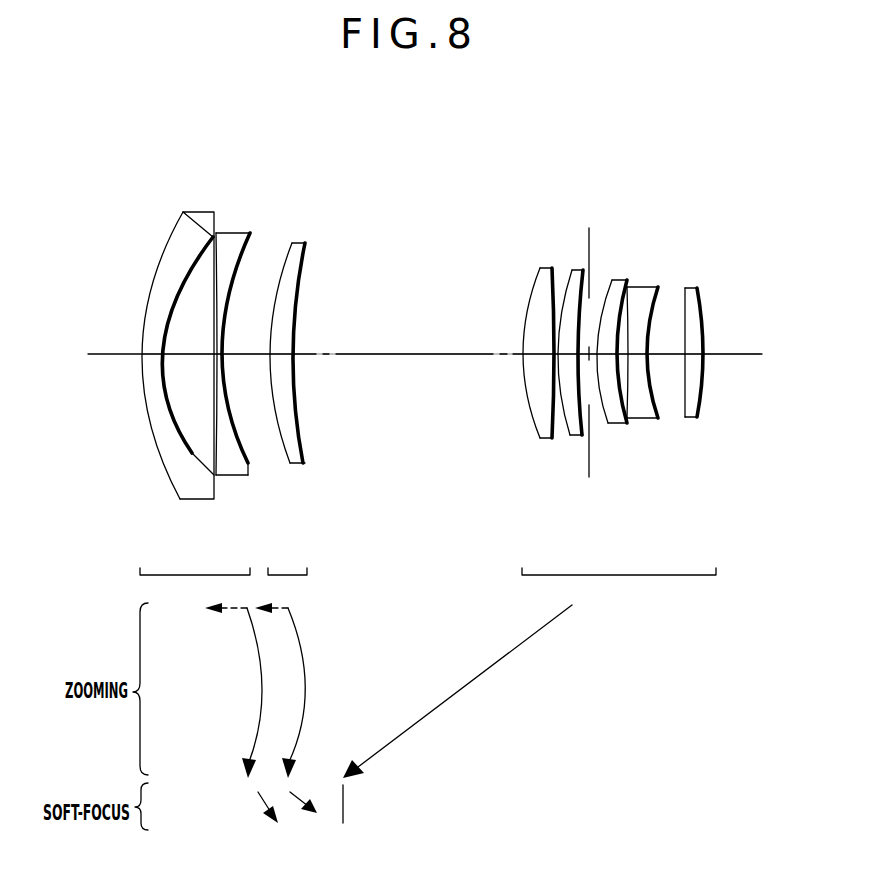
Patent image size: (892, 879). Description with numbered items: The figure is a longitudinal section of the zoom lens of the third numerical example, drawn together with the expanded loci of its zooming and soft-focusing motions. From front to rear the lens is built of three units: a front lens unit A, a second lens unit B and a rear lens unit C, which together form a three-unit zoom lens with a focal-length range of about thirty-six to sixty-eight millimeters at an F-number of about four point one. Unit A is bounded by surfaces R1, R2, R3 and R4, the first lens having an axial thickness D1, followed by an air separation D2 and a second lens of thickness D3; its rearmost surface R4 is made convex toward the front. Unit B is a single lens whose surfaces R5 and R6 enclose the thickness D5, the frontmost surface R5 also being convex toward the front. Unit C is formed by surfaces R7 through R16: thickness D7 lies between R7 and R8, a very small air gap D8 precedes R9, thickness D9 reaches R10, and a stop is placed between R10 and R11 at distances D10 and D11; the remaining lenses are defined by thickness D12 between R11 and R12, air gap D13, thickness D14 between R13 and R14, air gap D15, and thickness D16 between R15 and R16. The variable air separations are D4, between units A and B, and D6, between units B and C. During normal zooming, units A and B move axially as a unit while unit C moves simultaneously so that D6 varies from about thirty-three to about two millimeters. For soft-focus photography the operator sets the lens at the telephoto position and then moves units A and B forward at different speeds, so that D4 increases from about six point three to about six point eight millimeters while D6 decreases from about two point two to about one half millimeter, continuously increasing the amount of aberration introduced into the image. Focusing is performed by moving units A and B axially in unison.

The lens unit A is at (270, 128).
The lens unit B is at (325, 128).
The lens unit C is at (710, 128).
The first lens surface R1 is at (167, 242).
The second lens surface R2 is at (202, 235).
The third lens surface R3 is at (219, 247).
The fourth lens surface R4 is at (250, 253).
The fifth lens surface R5 is at (289, 250).
The sixth lens surface R6 is at (308, 253).
The seventh lens surface R7 is at (530, 287).
The eighth lens surface R8 is at (549, 280).
The ninth lens surface R9 is at (571, 282).
The tenth lens surface R10 is at (581, 278).
The eleventh lens surface R11 is at (608, 287).
The twelfth lens surface R12 is at (626, 288).
The thirteenth lens surface R13 is at (631, 292).
The fourteenth lens surface R14 is at (661, 300).
The fifteenth lens surface R15 is at (686, 296).
The sixteenth lens surface R16 is at (700, 297).
The axial thickness D1 is at (152, 357).
The axial separation D2 is at (190, 357).
The axial thickness D3 is at (230, 357).
The variable separation D4 is at (255, 357).
The axial thickness D5 is at (280, 357).
The variable separation D6 is at (398, 356).
The axial thickness D7 is at (536, 357).
The axial separation D8 is at (563, 357).
The axial thickness D9 is at (575, 357).
The axial separation D10 is at (592, 357).
The axial separation D11 is at (607, 357).
The axial thickness D12 is at (622, 357).
The axial separation D13 is at (637, 357).
The axial thickness D14 is at (665, 357).
The axial separation D15 is at (694, 357).
The axial thickness D16 is at (708, 357).